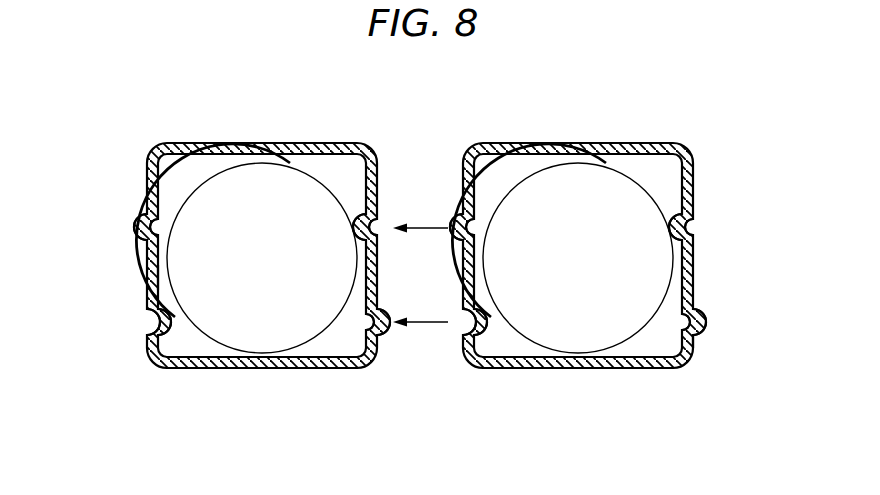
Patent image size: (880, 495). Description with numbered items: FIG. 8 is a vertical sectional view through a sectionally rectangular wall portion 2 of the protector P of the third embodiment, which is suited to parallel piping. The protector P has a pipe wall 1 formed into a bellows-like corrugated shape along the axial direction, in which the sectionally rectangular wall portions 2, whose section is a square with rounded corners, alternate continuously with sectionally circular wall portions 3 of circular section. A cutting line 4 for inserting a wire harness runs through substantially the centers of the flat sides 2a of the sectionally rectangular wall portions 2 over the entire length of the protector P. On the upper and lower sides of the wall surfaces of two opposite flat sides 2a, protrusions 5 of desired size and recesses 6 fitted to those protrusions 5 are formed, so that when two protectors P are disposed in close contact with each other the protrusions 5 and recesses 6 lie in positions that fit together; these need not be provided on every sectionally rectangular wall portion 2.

The pipe wall 1 is at (693, 185).
The sectionally rectangular wall portion 2 is at (152, 258).
The flat side 2a is at (214, 143).
The sectionally circular wall portion 3 is at (150, 277).
The cutting line 4 is at (262, 163).
The protrusion 5 is at (143, 223).
The recess 6 is at (152, 322).
The protector P is at (130, 132).